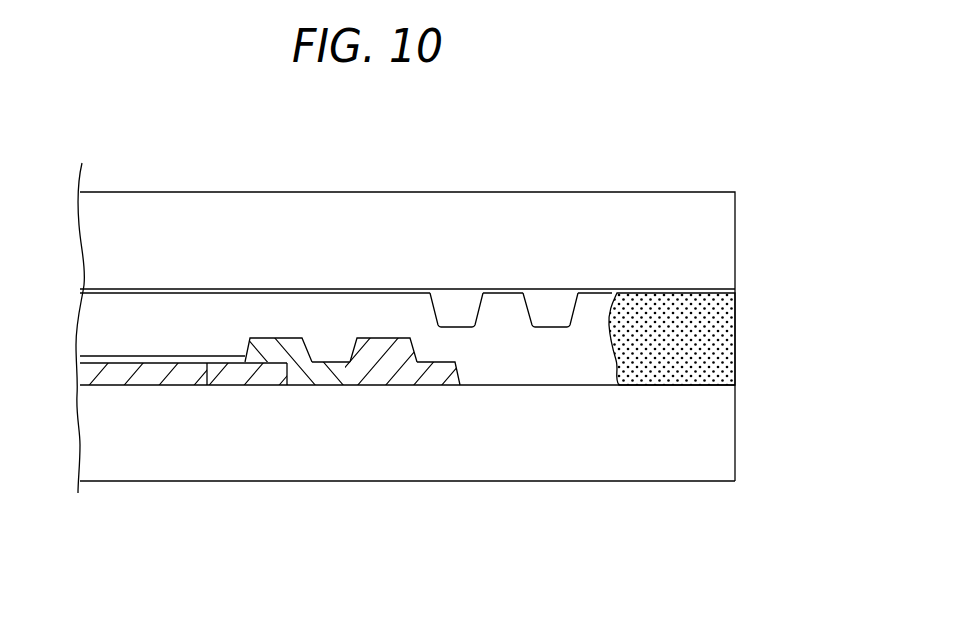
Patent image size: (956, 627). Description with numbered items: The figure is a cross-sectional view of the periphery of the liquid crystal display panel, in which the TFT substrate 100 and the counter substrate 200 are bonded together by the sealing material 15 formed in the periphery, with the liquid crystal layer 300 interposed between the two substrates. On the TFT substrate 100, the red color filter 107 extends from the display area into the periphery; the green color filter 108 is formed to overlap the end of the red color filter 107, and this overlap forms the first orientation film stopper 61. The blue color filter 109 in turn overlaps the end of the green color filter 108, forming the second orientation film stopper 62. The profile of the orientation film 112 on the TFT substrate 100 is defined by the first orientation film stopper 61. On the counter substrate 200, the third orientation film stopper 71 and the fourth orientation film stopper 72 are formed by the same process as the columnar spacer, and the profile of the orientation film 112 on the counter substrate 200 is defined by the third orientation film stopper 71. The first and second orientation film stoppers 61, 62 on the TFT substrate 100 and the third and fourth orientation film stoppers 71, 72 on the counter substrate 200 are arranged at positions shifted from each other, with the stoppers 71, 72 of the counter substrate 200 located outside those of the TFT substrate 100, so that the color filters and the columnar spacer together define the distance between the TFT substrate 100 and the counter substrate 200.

The liquid crystal layer 300 is at (100, 322).
The counter substrate 200 is at (407, 225).
The TFT substrate 100 is at (532, 440).
The orientation film 112 is at (305, 293).
The red color filter 107 is at (152, 374).
The first orientation film stopper 61 is at (276, 336).
The green color filter 108 is at (323, 377).
The second orientation film stopper 62 is at (383, 336).
The blue color filter 109 is at (425, 374).
The third orientation film stopper 71 is at (465, 305).
The fourth orientation film stopper 72 is at (548, 305).
The sealing material 15 is at (678, 348).